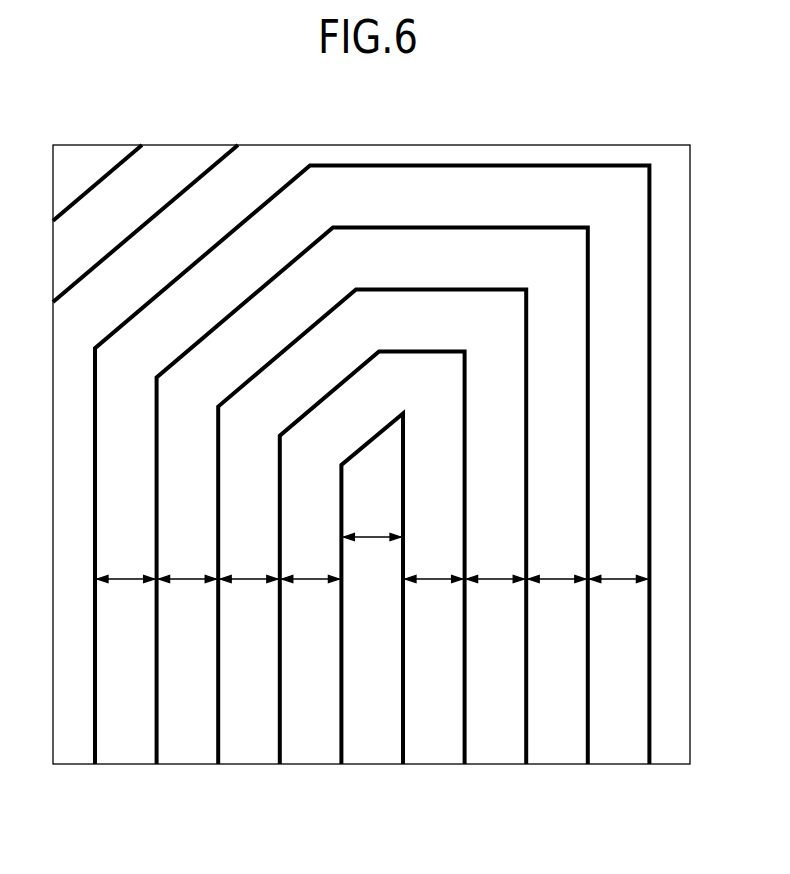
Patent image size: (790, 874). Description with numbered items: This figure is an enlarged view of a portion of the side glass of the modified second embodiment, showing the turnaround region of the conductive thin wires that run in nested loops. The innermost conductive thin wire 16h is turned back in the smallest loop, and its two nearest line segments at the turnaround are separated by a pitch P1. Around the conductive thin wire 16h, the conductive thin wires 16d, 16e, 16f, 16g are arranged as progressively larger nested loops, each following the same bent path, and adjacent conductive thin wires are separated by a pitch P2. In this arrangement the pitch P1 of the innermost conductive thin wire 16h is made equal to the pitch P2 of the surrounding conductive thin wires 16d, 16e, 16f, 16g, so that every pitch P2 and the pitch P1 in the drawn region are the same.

The conductive thin wire 16d is at (95, 723).
The conductive thin wire 16e is at (157, 723).
The conductive thin wire 16f is at (218, 723).
The conductive thin wire 16g is at (280, 723).
The conductive thin wire 16h is at (341, 723).
The pitch P1 is at (372, 523).
The pitch P2 is at (372, 564).